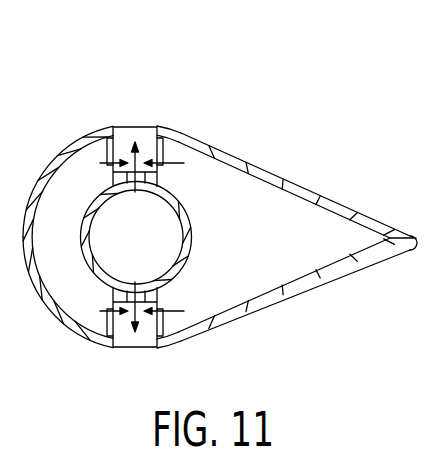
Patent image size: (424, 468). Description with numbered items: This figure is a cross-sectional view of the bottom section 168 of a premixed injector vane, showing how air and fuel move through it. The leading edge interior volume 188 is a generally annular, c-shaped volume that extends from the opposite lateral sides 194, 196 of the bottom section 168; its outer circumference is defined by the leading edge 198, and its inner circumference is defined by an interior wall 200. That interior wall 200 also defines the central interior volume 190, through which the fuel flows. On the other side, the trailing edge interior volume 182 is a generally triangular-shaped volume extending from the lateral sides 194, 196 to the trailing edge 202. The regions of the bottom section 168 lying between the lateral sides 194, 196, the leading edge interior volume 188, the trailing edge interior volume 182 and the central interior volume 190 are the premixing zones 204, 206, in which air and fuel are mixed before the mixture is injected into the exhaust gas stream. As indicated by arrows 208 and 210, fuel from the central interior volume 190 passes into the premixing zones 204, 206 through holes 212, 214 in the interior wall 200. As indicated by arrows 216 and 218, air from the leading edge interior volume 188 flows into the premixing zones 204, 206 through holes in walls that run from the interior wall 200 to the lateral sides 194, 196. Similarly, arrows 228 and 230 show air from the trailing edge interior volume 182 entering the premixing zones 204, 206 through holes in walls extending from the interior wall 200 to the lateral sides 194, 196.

The bottom section 168 is at (42, 114).
The trailing edge interior volume 182 is at (282, 272).
The leading edge interior volume 188 is at (87, 165).
The central interior volume 190 is at (105, 247).
The lateral side 194 is at (152, 138).
The lateral side 196 is at (165, 345).
The leading edge 198 is at (42, 285).
The interior wall 200 is at (92, 283).
The trailing edge 202 is at (416, 246).
The premixing zone 204 is at (132, 133).
The premixing zone 206 is at (145, 325).
The arrow 208 is at (152, 192).
The arrow 210 is at (183, 246).
The hole 212 is at (145, 183).
The hole 214 is at (145, 291).
The arrow 216 is at (104, 155).
The arrow 218 is at (100, 332).
The arrow 228 is at (176, 158).
The arrow 230 is at (183, 315).